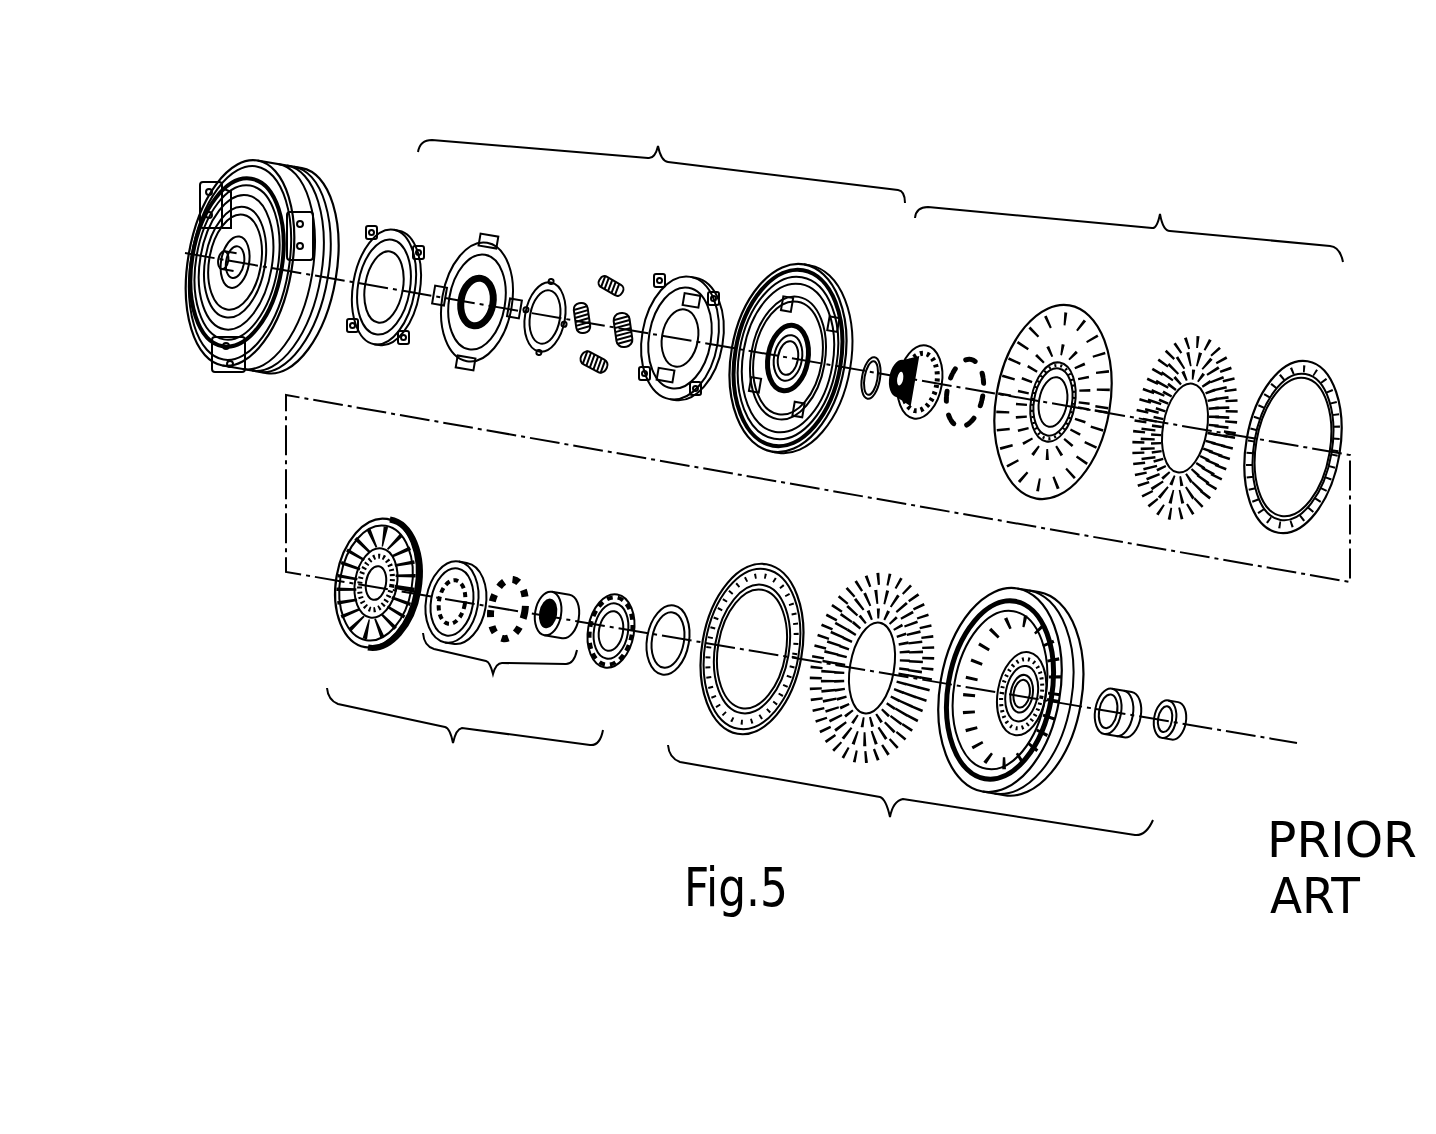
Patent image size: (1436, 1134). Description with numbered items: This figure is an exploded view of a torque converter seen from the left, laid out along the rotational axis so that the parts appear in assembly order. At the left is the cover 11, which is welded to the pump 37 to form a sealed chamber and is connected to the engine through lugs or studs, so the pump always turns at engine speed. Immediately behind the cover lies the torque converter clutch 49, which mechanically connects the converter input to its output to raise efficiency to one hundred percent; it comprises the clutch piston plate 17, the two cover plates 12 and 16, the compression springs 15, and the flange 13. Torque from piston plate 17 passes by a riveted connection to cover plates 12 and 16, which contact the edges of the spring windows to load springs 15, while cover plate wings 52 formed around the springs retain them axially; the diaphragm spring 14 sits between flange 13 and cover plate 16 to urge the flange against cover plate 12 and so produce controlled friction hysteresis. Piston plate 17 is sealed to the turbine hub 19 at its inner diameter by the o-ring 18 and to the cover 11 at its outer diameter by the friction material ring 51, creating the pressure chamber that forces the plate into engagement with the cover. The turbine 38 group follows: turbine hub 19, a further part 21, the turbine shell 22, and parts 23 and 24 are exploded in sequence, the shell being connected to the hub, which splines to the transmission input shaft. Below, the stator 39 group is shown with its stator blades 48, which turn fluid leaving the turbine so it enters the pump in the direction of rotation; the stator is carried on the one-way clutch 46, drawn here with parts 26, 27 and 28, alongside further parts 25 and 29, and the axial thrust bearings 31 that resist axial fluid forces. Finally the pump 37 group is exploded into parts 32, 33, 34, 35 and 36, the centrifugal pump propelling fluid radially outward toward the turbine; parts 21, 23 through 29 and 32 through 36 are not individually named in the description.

The cover 11 is at (327, 197).
The cover plate 12 is at (437, 240).
The flange 13 is at (503, 240).
The diaphragm spring 14 is at (557, 280).
The compression springs 15 is at (623, 280).
The cover plate 16 is at (707, 277).
The piston plate 17 is at (832, 270).
The o-ring 18 is at (880, 340).
The turbine hub 19 is at (932, 327).
The roller bearing 21 is at (980, 343).
The turbine shell 22 is at (1087, 303).
The turbine blades 23 is at (1213, 327).
The turbine core ring 24 is at (1307, 353).
The stator 25 is at (412, 512).
The one-way clutch race 26 is at (473, 547).
The rollers 27 is at (528, 560).
The bushing 28 is at (570, 582).
The thrust washer 29 is at (630, 572).
The axial thrust bearings 31 is at (687, 580).
The impeller core ring 32 is at (798, 563).
The impeller blades 33 is at (925, 585).
The impeller shell 34 is at (1080, 613).
The impeller hub sleeve 35 is at (1140, 670).
The bushing 36 is at (1190, 693).
The pump 37 is at (910, 805).
The turbine 38 is at (1129, 212).
The stator 39 is at (465, 738).
The one-way clutch 46 is at (500, 676).
The stator blades 48 is at (387, 520).
The torque converter clutch 49 is at (661, 155).
The friction material ring 51 is at (783, 272).
The cover plate wings 52 is at (390, 240).